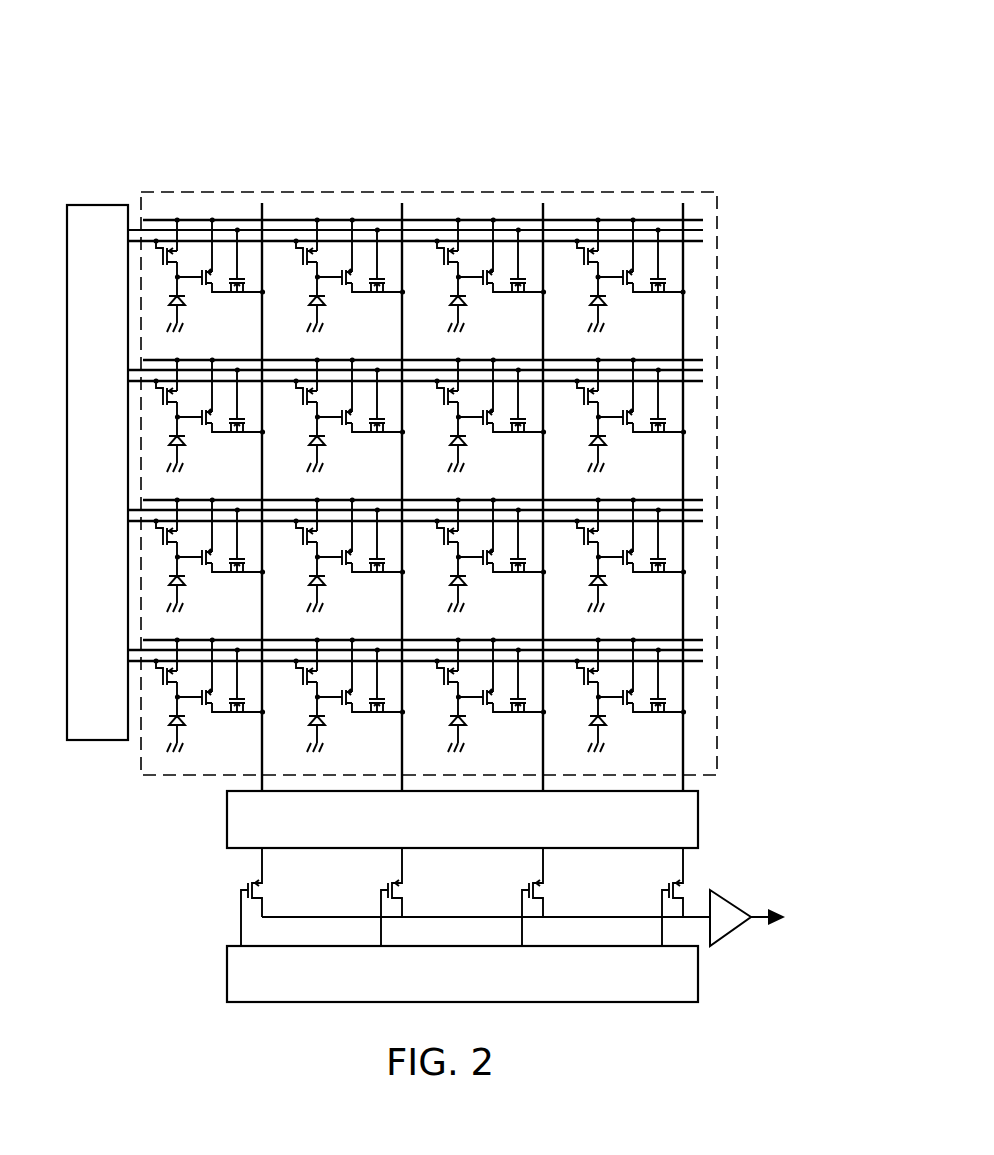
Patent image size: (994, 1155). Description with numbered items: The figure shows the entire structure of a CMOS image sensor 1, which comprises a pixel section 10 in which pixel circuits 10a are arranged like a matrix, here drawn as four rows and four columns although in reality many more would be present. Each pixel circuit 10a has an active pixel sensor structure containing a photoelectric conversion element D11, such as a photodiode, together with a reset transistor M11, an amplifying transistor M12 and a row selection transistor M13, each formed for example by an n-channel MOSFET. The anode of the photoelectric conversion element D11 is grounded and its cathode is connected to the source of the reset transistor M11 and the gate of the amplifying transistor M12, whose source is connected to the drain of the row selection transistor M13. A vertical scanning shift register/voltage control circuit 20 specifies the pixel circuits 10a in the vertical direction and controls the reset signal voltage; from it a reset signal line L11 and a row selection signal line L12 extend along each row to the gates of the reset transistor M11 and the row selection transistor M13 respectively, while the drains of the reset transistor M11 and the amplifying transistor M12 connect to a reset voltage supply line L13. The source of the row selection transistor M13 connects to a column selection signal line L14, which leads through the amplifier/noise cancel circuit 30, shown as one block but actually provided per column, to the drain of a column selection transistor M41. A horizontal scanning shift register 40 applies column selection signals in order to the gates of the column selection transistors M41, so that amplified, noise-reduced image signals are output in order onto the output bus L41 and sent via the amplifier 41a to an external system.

The CMOS image sensor 1 is at (289, 96).
The pixel section 10 is at (288, 192).
The pixel circuit 10a is at (575, 212).
The vertical scanning shift register/voltage control circuit 20 is at (102, 205).
The amplifier/noise cancel circuit 30 is at (227, 818).
The horizontal scanning shift register 40 is at (227, 966).
The amplifier 41a is at (728, 901).
The reset signal line L11 is at (703, 241).
The row selection signal line L12 is at (703, 231).
The reset voltage supply line L13 is at (703, 220).
The column selection signal line L14 is at (684, 468).
The output bus L41 is at (590, 917).
The reset transistor M11 is at (577, 263).
The amplifying transistor M12 is at (628, 290).
The row selection transistor M13 is at (663, 297).
The photoelectric conversion element D11 is at (587, 307).
The column selection transistor M41 is at (244, 888).